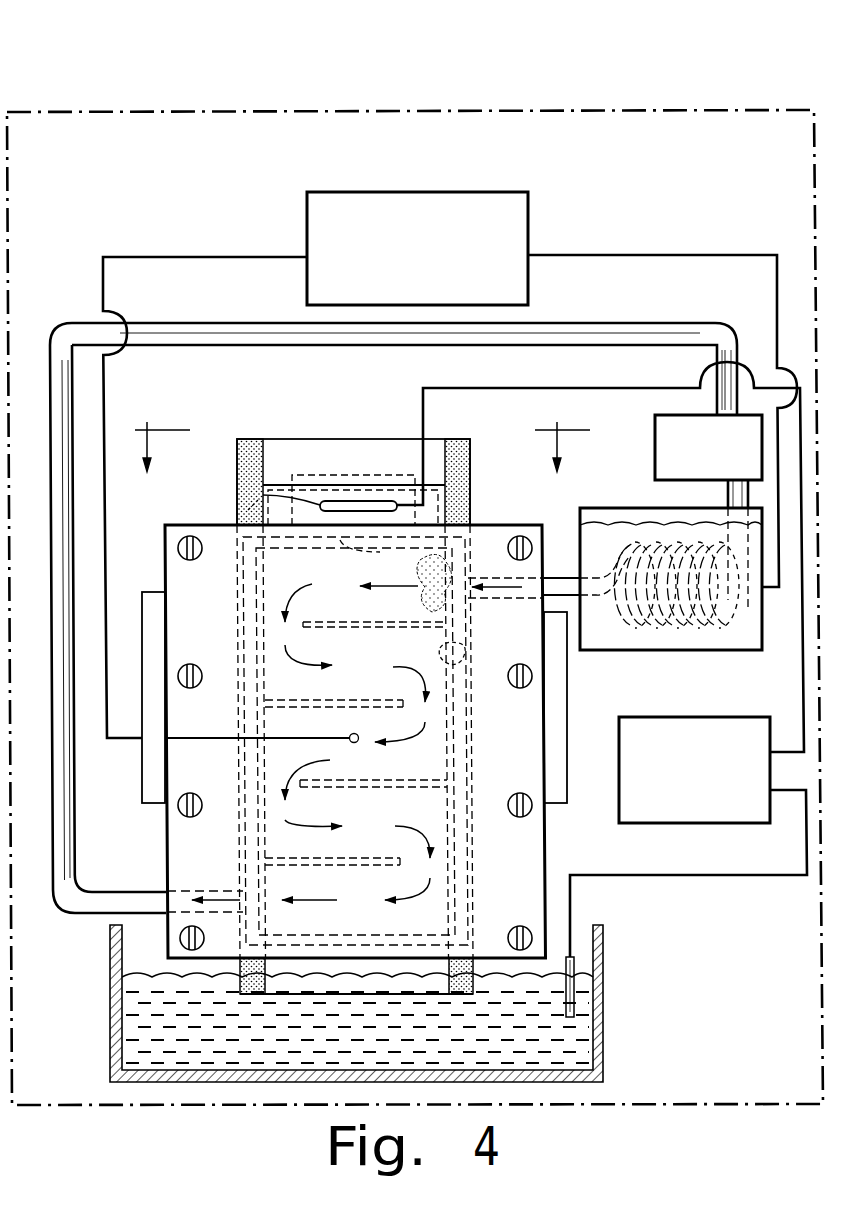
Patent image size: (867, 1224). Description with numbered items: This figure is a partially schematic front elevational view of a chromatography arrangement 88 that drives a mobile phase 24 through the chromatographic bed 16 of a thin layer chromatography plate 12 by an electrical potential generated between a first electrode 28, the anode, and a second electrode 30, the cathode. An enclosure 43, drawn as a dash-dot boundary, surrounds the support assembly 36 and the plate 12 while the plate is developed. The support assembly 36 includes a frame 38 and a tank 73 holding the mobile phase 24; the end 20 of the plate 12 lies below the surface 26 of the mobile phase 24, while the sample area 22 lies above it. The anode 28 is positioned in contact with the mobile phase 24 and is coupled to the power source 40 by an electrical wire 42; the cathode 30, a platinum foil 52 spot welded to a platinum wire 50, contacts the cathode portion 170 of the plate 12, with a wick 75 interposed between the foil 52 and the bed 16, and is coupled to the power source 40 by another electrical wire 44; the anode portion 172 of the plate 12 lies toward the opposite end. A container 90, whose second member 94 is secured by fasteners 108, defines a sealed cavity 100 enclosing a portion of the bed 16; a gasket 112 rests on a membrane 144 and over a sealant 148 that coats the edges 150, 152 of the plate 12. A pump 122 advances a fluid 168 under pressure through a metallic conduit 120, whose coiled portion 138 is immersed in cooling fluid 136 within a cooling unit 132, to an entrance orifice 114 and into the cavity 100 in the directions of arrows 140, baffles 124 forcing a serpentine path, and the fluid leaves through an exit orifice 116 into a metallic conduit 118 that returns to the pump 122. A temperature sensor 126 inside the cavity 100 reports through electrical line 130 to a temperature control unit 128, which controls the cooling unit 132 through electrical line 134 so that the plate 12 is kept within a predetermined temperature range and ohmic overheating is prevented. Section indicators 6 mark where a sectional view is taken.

The chromatography arrangement 88 is at (120, 78).
The enclosure 43 is at (655, 110).
The temperature control unit 128 is at (410, 192).
The electrical line 130 is at (245, 257).
The electrical line 134 is at (595, 255).
The metallic conduit 118 is at (680, 323).
The electrical wire 44 is at (795, 405).
The thin layer chromatography plate 12 is at (250, 439).
The sealant 148 is at (267, 448).
The second electrode 30 is at (283, 466).
The chromatographic bed 16 is at (400, 450).
The cathode portion 170 is at (434, 450).
The edge 152 is at (237, 455).
The platinum wire 50 is at (265, 495).
The wick 75 is at (248, 506).
The platinum foil 52 is at (463, 487).
The container 90 is at (500, 512).
The edge 150 is at (475, 520).
The metallic conduit 120 is at (560, 587).
The pump 122 is at (655, 427).
The cooling fluid 136 is at (640, 525).
The section line 6 is at (362, 463).
The fluid 168 is at (445, 572).
The gasket 112 is at (345, 548).
The arrows 140 is at (418, 594).
The baffles 124 is at (417, 642).
The temperature sensor 126 is at (350, 737).
The membrane 144 is at (280, 755).
The exit orifice 116 is at (220, 892).
The sample area 22 is at (445, 915).
The anode portion 172 is at (520, 912).
The fastener 108 is at (197, 688).
The second member 94 is at (200, 620).
The entrance orifice 114 is at (495, 595).
The sealed cavity 100 is at (465, 657).
The frame 38 is at (152, 618).
The coiled portion 138 is at (655, 648).
The electrical power source 40 is at (705, 730).
The cooling unit 132 is at (745, 650).
The support assembly 36 is at (150, 820).
The mobile phase 24 is at (168, 985).
The surface 26 is at (560, 978).
The first electrode 28 is at (580, 960).
The tank 73 is at (598, 992).
The electrical wire 42 is at (750, 877).
The end 20 is at (320, 995).